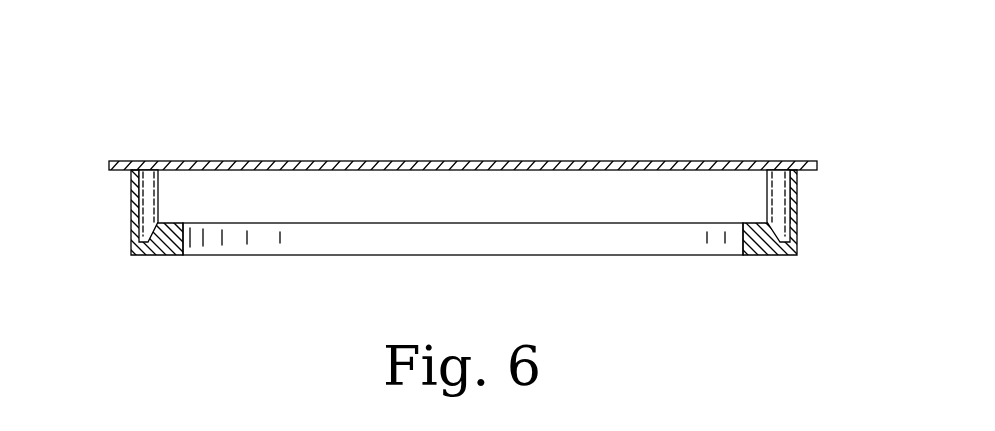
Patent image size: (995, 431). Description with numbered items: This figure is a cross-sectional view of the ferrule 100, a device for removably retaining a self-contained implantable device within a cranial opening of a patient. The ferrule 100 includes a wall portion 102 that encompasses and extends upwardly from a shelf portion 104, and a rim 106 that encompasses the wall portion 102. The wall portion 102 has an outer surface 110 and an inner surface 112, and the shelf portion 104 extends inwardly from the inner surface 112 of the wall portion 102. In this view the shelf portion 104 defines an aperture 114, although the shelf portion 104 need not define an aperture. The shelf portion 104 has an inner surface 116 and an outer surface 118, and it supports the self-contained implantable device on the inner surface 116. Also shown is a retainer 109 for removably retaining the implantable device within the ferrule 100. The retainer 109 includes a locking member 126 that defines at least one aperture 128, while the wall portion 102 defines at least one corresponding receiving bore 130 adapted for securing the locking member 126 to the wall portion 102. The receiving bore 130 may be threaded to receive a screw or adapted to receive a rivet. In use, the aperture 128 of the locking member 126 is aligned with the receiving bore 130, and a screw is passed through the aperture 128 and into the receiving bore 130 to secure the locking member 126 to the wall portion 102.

The ferrule 100 is at (148, 63).
The wall portion 102 is at (167, 210).
The shelf portion 104 is at (177, 222).
The rim 106 is at (167, 210).
The retainer 109 is at (612, 153).
The outer surface 110 is at (170, 210).
The inner surface 112 is at (158, 190).
The aperture 114 is at (342, 222).
The inner surface 116 is at (772, 222).
The outer surface 118 is at (775, 255).
The locking member 126 is at (463, 125).
The aperture 128 is at (793, 160).
The receiving bore 130 is at (817, 161).